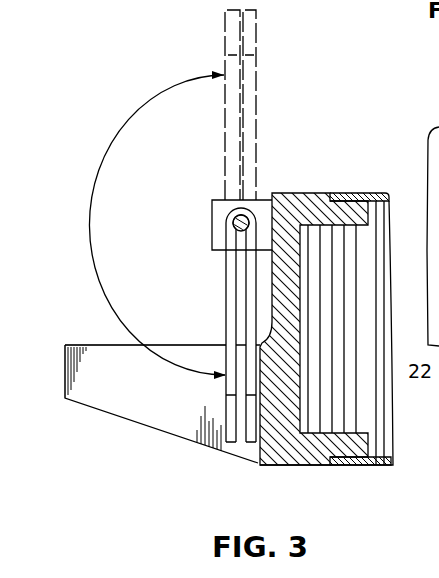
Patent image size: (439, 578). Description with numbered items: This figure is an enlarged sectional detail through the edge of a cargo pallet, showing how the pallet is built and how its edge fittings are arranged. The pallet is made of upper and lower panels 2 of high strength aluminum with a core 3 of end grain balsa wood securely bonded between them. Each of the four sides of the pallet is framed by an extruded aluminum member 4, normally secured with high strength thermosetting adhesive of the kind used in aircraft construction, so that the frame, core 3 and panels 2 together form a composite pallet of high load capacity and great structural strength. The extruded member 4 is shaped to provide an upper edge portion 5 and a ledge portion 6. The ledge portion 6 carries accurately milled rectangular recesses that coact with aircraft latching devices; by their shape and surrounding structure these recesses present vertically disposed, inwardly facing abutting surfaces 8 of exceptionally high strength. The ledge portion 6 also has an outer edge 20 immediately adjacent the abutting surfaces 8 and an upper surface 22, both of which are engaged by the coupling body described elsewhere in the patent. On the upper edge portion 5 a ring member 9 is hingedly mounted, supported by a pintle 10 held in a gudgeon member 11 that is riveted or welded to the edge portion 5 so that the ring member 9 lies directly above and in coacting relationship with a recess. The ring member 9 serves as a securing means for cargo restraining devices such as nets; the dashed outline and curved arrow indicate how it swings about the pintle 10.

The upper and lower panels 2 is at (347, 193).
The core 3 is at (358, 399).
The extruded aluminum members 4 is at (282, 446).
The upper edge portion 5 is at (274, 193).
The ledge portion 6 is at (110, 345).
The abutting surfaces 8 is at (142, 398).
The ring members 9 is at (226, 282).
The pintle 10 is at (219, 200).
The gudgeon member 11 is at (212, 218).
The outer edge 20 is at (65, 372).
The upper surface 22 is at (182, 345).